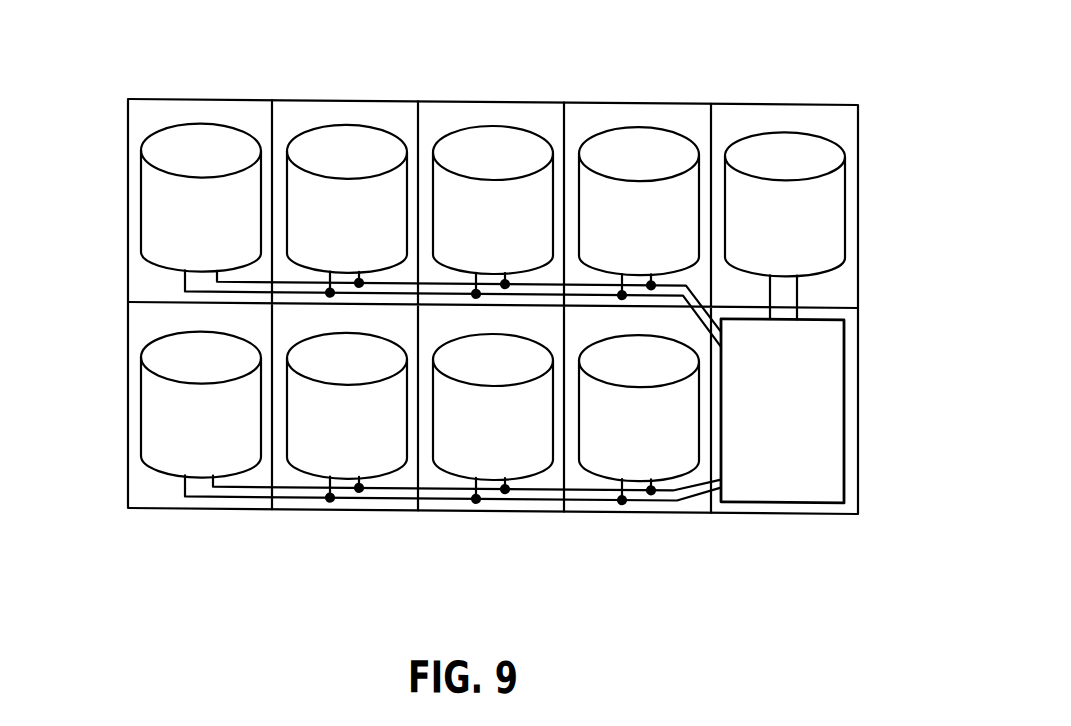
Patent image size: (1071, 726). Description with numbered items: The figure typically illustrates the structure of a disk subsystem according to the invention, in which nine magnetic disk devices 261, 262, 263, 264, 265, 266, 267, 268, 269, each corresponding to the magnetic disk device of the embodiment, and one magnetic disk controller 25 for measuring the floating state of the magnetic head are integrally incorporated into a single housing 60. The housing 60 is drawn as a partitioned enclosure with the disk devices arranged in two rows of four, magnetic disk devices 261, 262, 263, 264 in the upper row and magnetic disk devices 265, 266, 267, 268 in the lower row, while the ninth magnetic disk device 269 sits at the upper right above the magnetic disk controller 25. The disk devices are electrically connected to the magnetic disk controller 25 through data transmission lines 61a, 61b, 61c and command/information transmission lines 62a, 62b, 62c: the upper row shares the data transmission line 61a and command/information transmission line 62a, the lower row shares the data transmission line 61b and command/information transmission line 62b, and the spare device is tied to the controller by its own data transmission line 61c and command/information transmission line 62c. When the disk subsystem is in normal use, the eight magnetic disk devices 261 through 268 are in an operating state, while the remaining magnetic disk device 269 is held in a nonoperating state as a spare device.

The housing 60 is at (162, 99).
The magnetic disk device 261 is at (203, 123).
The magnetic disk device 262 is at (349, 123).
The magnetic disk device 263 is at (487, 123).
The magnetic disk device 264 is at (637, 123).
The magnetic disk device 265 is at (162, 473).
The magnetic disk device 266 is at (379, 475).
The magnetic disk device 267 is at (462, 475).
The magnetic disk device 268 is at (676, 474).
The magnetic disk device 269 is at (780, 127).
The data transmission line 61a is at (185, 287).
The command/information transmission line 62a is at (234, 281).
The data transmission line 61b is at (192, 497).
The command/information transmission line 62b is at (242, 487).
The data transmission line 61c is at (771, 285).
The command/information transmission line 62c is at (797, 298).
The magnetic disk controller 25 is at (781, 498).